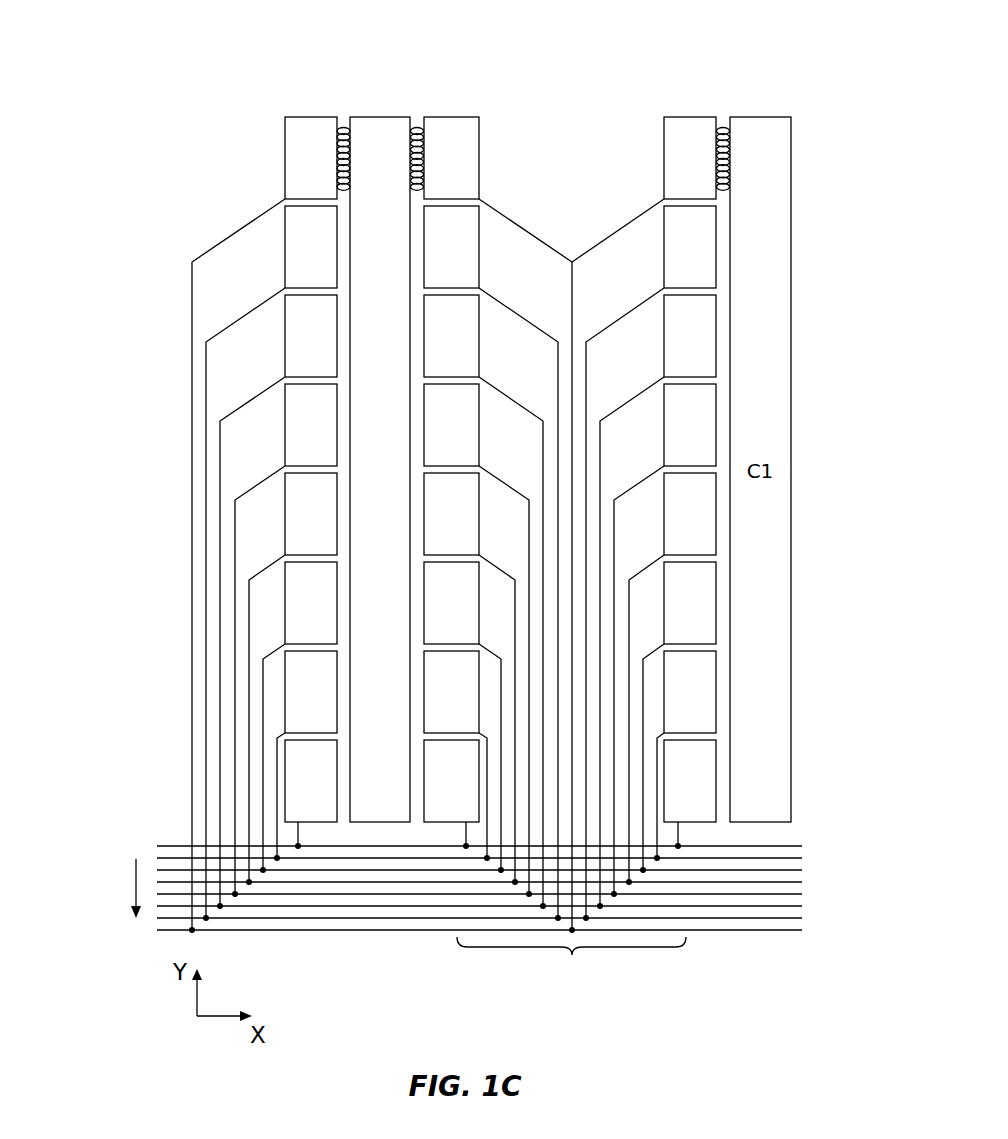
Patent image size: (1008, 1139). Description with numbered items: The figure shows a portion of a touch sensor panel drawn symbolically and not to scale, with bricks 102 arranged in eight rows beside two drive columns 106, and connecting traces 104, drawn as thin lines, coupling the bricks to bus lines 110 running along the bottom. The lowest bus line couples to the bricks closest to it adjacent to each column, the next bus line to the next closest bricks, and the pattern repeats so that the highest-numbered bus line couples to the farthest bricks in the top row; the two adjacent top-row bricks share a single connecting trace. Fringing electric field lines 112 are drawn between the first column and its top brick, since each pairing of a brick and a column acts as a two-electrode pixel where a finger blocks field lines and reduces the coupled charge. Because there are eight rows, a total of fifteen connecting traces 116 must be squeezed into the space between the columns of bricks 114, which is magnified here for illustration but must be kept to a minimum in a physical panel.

The bricks 102 is at (307, 117).
The connecting traces 104 is at (193, 587).
The columns 106 is at (380, 117).
The bus lines 110 is at (805, 938).
The fringing electric field lines 112 is at (343, 128).
The columns of bricks 114 is at (715, 86).
The connecting traces 116 is at (572, 956).